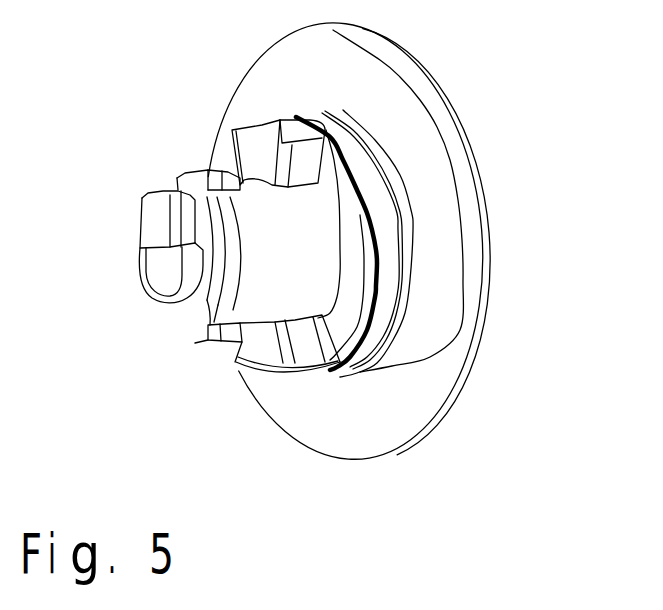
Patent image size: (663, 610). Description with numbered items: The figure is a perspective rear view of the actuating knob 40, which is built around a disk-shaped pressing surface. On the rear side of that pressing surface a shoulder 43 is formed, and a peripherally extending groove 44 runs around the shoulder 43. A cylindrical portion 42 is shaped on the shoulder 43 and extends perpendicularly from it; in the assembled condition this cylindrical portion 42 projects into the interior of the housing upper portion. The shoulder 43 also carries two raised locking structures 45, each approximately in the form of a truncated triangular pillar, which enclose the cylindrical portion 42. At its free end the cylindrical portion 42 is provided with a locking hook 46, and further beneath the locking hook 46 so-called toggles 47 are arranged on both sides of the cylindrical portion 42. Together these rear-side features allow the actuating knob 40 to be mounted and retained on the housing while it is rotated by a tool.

The actuating knob 40 is at (474, 116).
The cylindrical portion 42 is at (292, 262).
The shoulder 43 is at (353, 273).
The groove 44 is at (388, 216).
The locking structures 45 is at (255, 142).
The locking hook 46 is at (155, 217).
The toggles 47 is at (187, 178).